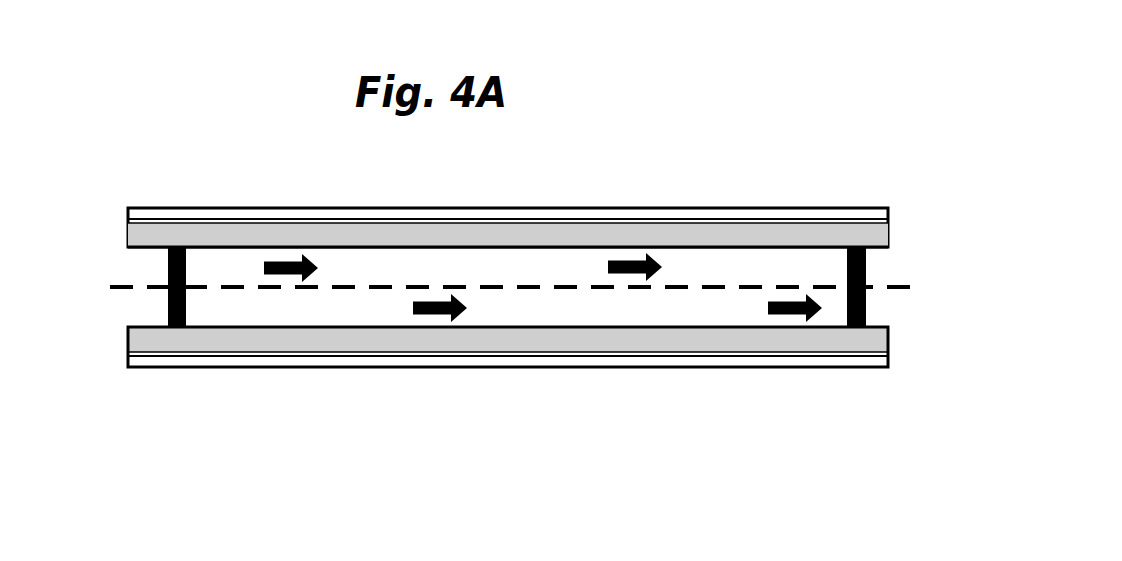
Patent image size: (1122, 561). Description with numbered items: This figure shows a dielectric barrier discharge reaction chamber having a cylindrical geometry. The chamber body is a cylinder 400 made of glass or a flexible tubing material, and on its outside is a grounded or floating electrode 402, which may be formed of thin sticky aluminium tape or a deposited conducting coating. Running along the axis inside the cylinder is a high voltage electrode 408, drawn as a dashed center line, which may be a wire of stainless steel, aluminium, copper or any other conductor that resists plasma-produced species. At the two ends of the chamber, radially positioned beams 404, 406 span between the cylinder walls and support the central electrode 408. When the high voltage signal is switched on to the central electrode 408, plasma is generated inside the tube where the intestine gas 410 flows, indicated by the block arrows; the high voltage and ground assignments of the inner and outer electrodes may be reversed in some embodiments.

The cylinder 400 is at (128, 240).
The electrode 402 is at (128, 217).
The beam 404 is at (180, 327).
The beam 406 is at (866, 272).
The high voltage electrode 408 is at (343, 290).
The intestine gas 410 is at (282, 258).